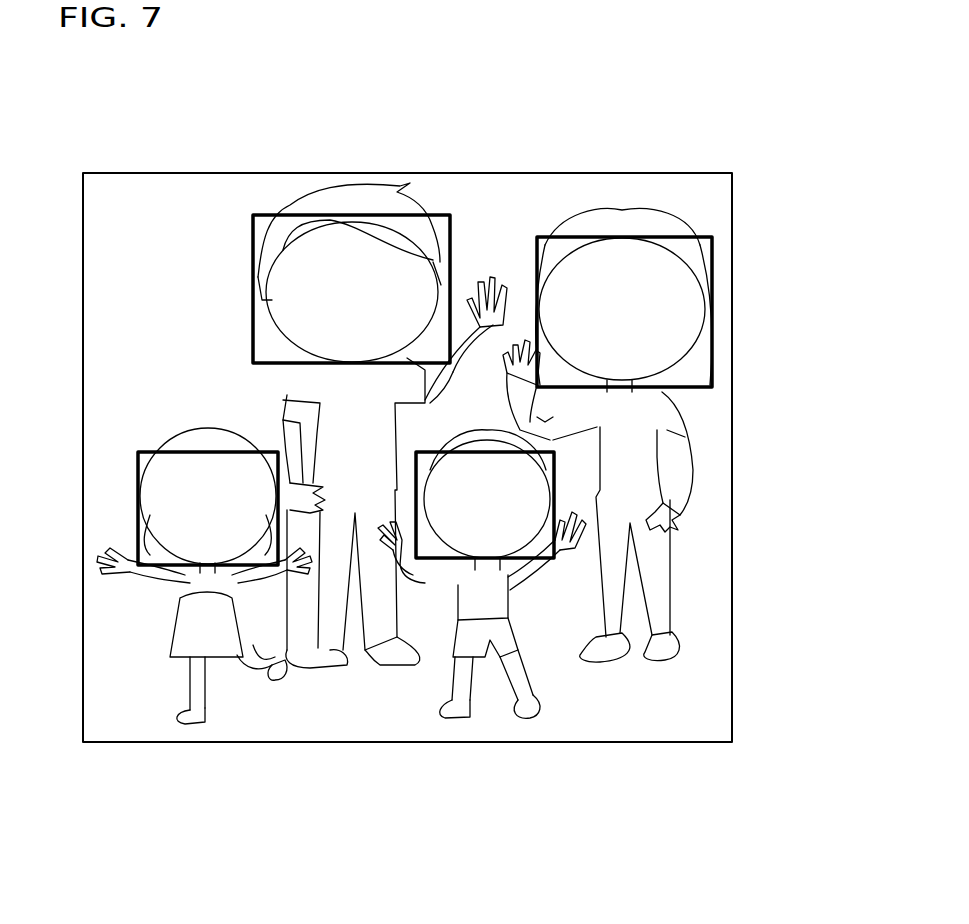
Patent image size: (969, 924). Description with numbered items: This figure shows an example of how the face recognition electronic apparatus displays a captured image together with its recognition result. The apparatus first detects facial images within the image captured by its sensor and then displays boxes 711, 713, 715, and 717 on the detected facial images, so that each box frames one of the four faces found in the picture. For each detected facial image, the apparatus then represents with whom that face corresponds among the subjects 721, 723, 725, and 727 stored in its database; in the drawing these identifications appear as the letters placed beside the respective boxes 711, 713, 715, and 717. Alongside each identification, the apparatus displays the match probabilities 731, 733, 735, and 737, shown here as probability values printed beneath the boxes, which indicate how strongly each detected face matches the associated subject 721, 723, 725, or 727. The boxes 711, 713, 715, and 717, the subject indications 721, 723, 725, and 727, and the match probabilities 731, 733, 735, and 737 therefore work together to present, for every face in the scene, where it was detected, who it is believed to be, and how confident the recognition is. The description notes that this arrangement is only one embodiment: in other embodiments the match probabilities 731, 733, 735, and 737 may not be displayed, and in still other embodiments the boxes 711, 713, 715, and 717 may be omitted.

The box 711 is at (440, 213).
The box 713 is at (694, 235).
The box 715 is at (136, 490).
The box 717 is at (548, 570).
The subject 721 is at (258, 186).
The subject 723 is at (543, 206).
The subject 725 is at (130, 433).
The subject 727 is at (405, 437).
The match probability 731 is at (250, 380).
The match probability 733 is at (643, 402).
The match probability 735 is at (135, 581).
The match probability 737 is at (470, 590).